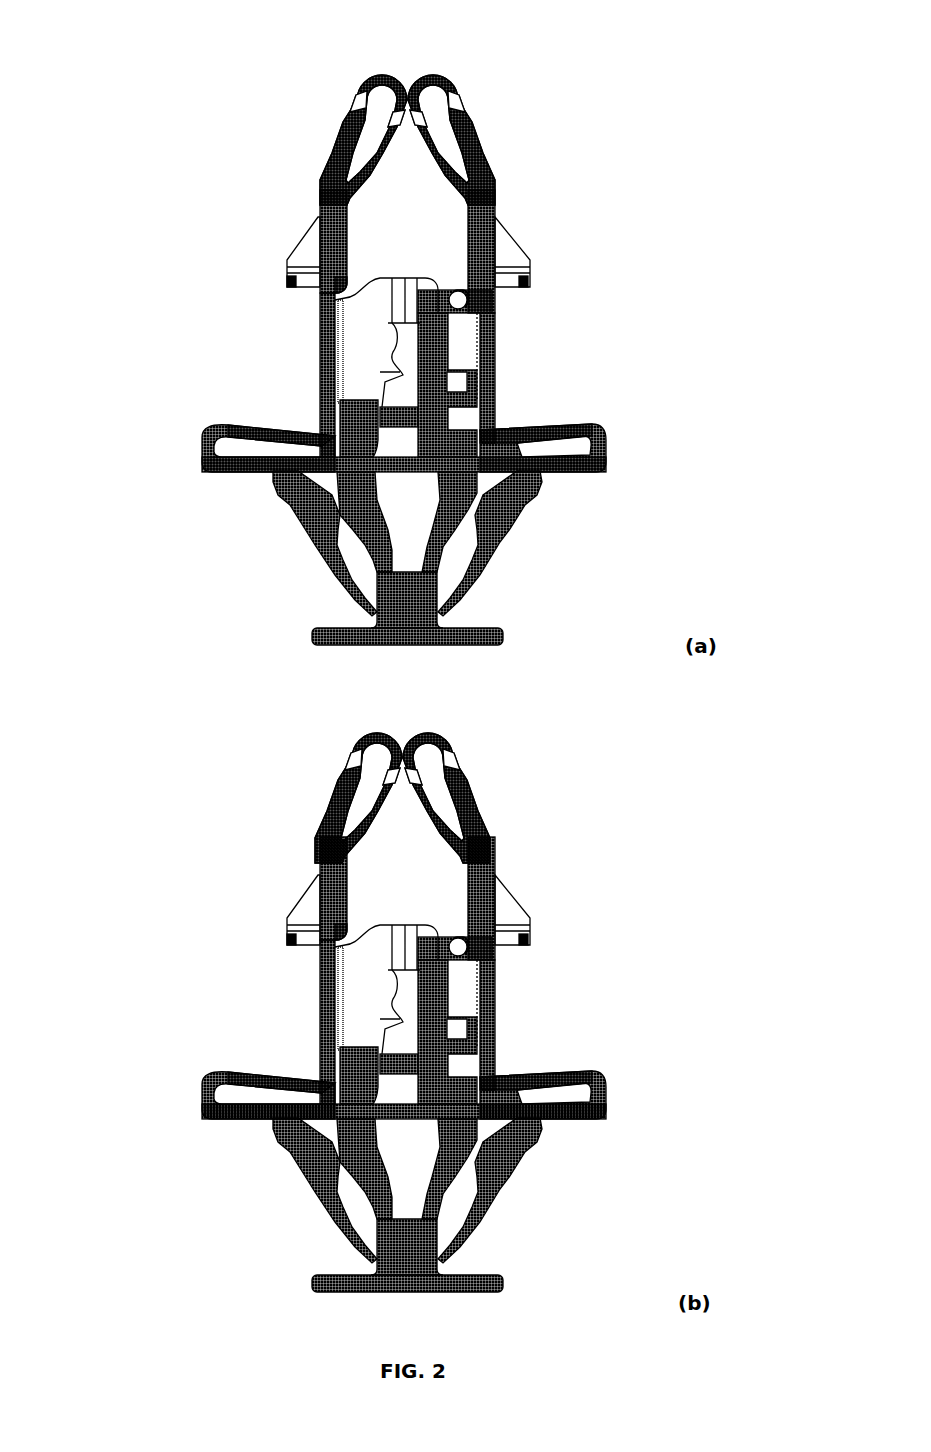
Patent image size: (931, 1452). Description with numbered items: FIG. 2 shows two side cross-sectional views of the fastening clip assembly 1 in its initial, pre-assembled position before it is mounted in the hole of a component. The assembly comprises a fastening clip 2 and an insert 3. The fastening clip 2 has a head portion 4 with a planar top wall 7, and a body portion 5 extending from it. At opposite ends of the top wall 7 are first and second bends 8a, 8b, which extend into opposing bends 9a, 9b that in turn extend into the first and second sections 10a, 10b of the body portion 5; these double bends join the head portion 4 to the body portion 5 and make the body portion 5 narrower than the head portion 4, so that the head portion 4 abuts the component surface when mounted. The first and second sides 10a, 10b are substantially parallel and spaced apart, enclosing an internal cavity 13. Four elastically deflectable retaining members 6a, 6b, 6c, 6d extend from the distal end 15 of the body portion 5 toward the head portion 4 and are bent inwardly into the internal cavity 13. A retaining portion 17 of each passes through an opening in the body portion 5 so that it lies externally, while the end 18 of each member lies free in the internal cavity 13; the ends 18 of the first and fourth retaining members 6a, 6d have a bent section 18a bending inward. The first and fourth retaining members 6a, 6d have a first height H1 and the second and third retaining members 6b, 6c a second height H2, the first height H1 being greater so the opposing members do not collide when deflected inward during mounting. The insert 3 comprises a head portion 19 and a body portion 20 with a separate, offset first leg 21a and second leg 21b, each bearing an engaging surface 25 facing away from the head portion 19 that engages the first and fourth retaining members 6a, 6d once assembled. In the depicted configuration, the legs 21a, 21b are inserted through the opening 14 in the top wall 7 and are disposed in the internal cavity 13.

The fastening clip assembly 1 is at (208, 117).
The fastening clip 2 is at (363, 320).
The insert 3 is at (388, 630).
The head portion 4 is at (555, 470).
The body portion 5 is at (363, 372).
The first retaining member 6a is at (477, 816).
The second retaining member 6b is at (347, 190).
The third retaining member 6c is at (347, 848).
The fourth retaining member 6d is at (477, 160).
The top wall 7 is at (253, 467).
The first bend 8a is at (215, 440).
The second bend 8b is at (615, 447).
The opposing bend 9a is at (283, 430).
The opposing bend 9b is at (497, 437).
The first section 10a is at (318, 258).
The second section 10b is at (498, 253).
The internal cavity 13 is at (422, 271).
The opening 14 is at (527, 490).
The distal end 15 is at (445, 54).
The retaining portion 17 is at (297, 245).
The end 18 is at (338, 282).
The bent section 18a is at (455, 292).
The head portion 19 is at (495, 637).
The body portion 20 is at (447, 527).
The first leg 21a is at (482, 1045).
The second leg 21b is at (482, 397).
The engaging surface 25 is at (470, 352).
The first height H1 is at (552, 76).
The second height H2 is at (268, 76).